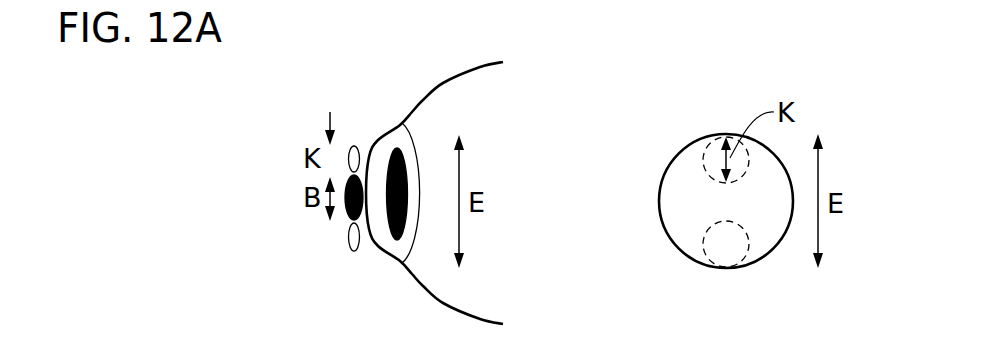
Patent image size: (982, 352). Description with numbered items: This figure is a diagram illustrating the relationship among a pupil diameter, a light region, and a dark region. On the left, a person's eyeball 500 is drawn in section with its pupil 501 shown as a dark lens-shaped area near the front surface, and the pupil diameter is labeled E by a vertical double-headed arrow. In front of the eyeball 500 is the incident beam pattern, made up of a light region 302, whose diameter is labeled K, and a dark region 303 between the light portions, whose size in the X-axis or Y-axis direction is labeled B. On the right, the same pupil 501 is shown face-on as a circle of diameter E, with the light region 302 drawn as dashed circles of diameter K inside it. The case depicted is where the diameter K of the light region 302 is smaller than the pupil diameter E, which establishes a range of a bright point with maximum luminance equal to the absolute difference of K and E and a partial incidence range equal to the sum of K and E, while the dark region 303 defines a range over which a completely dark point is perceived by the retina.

The eyeball 500 is at (443, 82).
The pupil 501 is at (405, 157).
The light region 302 is at (355, 252).
The dark region 303 is at (346, 220).